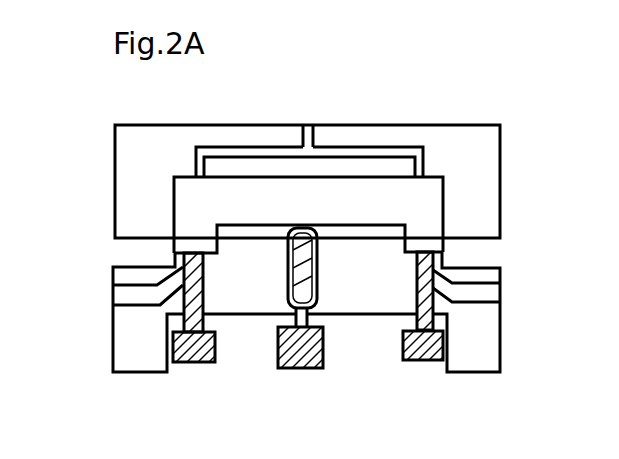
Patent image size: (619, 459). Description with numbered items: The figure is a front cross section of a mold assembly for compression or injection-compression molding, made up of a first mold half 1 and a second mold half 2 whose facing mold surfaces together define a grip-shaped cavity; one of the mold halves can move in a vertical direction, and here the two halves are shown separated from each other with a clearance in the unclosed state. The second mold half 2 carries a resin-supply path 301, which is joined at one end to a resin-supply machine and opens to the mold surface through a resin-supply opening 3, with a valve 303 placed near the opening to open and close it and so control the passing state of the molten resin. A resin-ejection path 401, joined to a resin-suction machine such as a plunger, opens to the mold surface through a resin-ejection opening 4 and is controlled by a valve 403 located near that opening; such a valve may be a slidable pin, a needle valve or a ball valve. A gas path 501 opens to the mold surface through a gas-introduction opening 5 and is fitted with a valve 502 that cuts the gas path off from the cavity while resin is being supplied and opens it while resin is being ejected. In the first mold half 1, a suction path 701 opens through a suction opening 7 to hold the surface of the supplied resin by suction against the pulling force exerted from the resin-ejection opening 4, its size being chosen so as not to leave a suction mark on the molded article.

The first mold half 1 is at (480, 178).
The second mold half 2 is at (465, 345).
The resin-supply opening 3 is at (367, 252).
The resin-ejection opening 4 is at (192, 253).
The gas-introduction opening 5 is at (501, 265).
The suction opening 7 is at (420, 175).
The resin-supply path 301 is at (310, 275).
The valve 303 is at (317, 367).
The resin-ejection path 401 is at (125, 298).
The valve 403 is at (190, 315).
The gas path 501 is at (473, 292).
The valve 502 is at (435, 272).
The suction path 701 is at (398, 148).